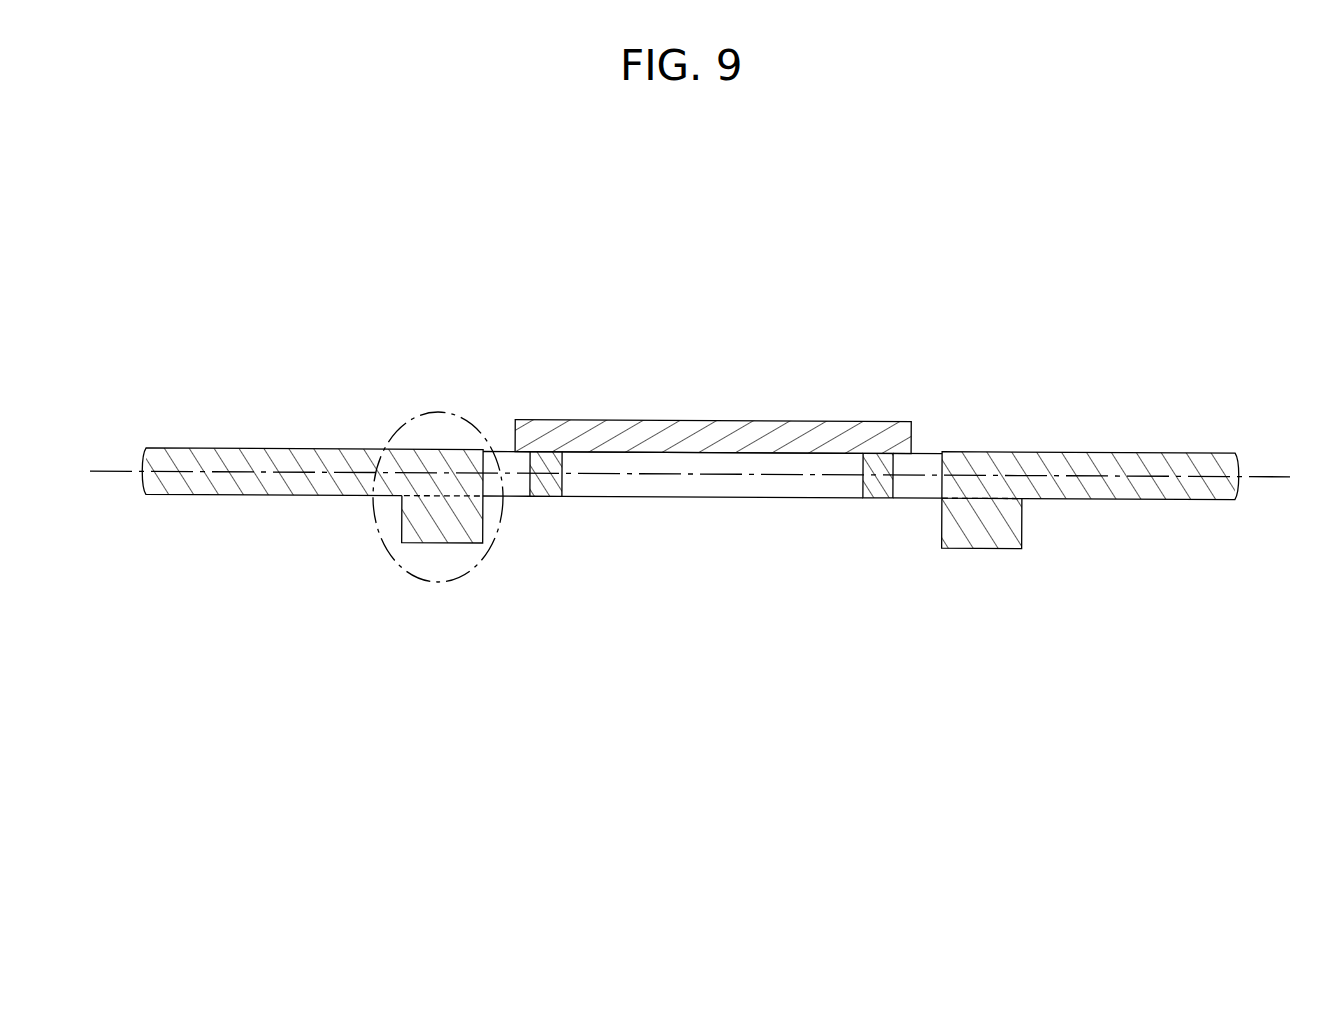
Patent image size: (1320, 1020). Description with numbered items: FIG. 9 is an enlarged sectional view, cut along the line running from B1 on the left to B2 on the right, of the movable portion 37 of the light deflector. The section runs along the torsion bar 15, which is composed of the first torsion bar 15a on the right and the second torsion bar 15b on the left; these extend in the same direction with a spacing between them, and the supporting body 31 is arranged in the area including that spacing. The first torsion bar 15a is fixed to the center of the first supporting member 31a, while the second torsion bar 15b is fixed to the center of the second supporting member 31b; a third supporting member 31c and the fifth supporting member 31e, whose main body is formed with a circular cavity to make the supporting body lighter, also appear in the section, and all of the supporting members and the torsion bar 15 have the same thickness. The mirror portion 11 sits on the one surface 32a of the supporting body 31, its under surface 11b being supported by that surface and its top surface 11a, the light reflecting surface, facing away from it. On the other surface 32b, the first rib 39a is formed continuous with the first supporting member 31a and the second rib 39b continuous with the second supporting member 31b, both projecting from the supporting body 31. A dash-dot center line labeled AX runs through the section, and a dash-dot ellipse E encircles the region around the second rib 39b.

The mirror portion 11 is at (713, 450).
The top surface 11a is at (710, 420).
The under surface 11b is at (717, 453).
The torsion bar 15 is at (690, 432).
The first torsion bar 15a is at (1113, 453).
The second torsion bar 15b is at (263, 448).
The supporting body 31 is at (715, 465).
The first supporting member 31a is at (988, 463).
The second supporting member 31b is at (438, 460).
The third supporting member 31c is at (507, 458).
The fifth supporting member 31e is at (552, 497).
The one surface 32a is at (836, 395).
The other surface 32b is at (836, 556).
The movable portion 37 is at (1065, 312).
The first rib 39a is at (1022, 498).
The second rib 39b is at (402, 495).
The rotation axis AX is at (107, 470).
The enlarged region E is at (462, 580).
The section line B1-B2 B1 is at (144, 624).
The section line B1- B2 is at (1238, 633).